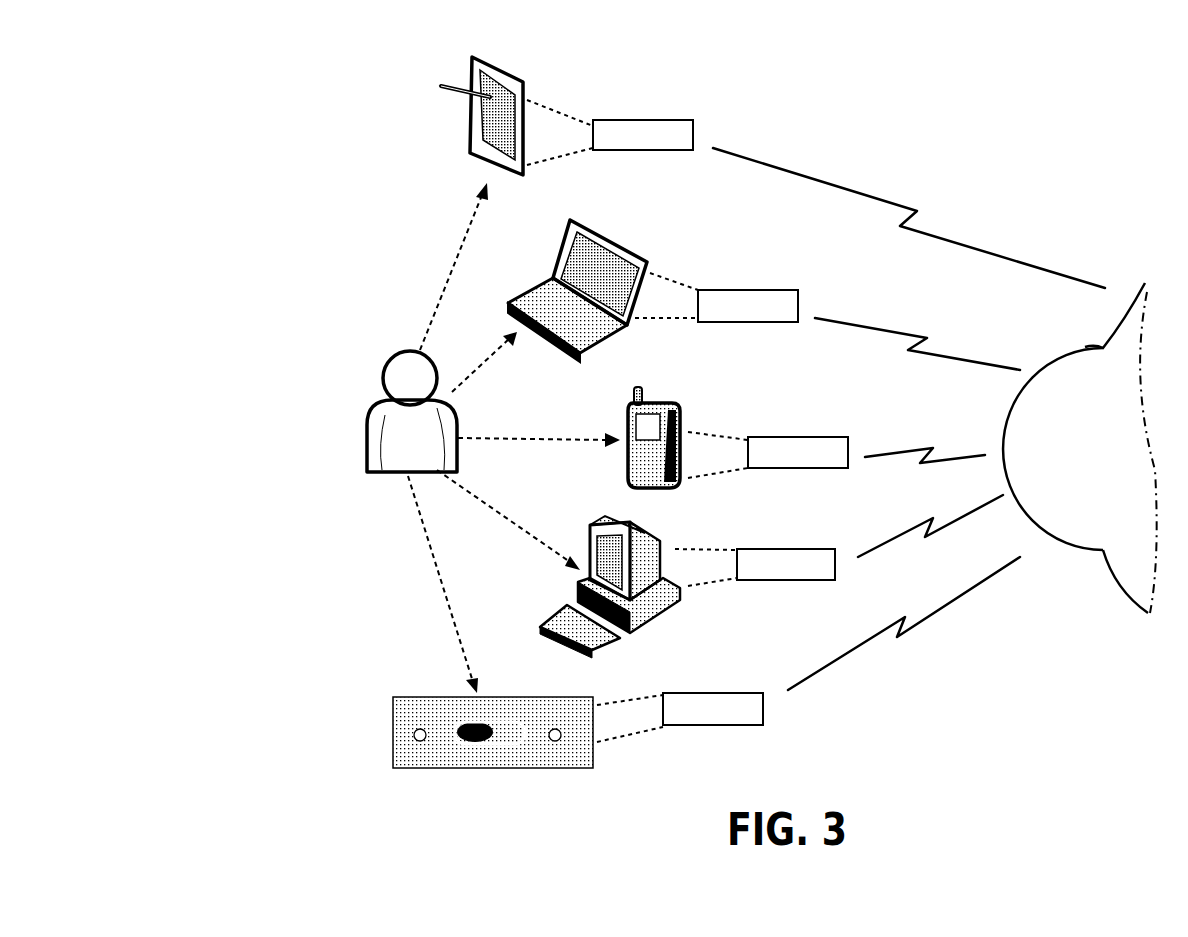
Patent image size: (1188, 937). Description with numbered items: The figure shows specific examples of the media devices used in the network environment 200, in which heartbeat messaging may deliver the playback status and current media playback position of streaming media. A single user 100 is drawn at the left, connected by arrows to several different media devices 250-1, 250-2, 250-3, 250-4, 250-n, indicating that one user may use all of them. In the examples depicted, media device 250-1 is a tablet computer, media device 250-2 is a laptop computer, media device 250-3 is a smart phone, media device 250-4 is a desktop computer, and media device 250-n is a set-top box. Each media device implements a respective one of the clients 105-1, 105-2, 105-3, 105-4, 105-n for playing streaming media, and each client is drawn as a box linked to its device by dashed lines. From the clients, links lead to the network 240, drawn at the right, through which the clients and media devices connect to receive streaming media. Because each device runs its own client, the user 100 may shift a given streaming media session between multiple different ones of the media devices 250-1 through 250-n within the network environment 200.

The network environment 200 is at (270, 96).
The user 100 is at (402, 356).
The media device 250-1 is at (518, 78).
The media device 250-2 is at (640, 262).
The media device 250-3 is at (696, 395).
The media device 250-4 is at (680, 520).
The media device 250-n is at (572, 708).
The client 105-1 is at (690, 120).
The client 105-2 is at (798, 290).
The client 105-3 is at (845, 437).
The client 105-4 is at (835, 549).
The client 105-n is at (756, 693).
The network 240 is at (1078, 342).